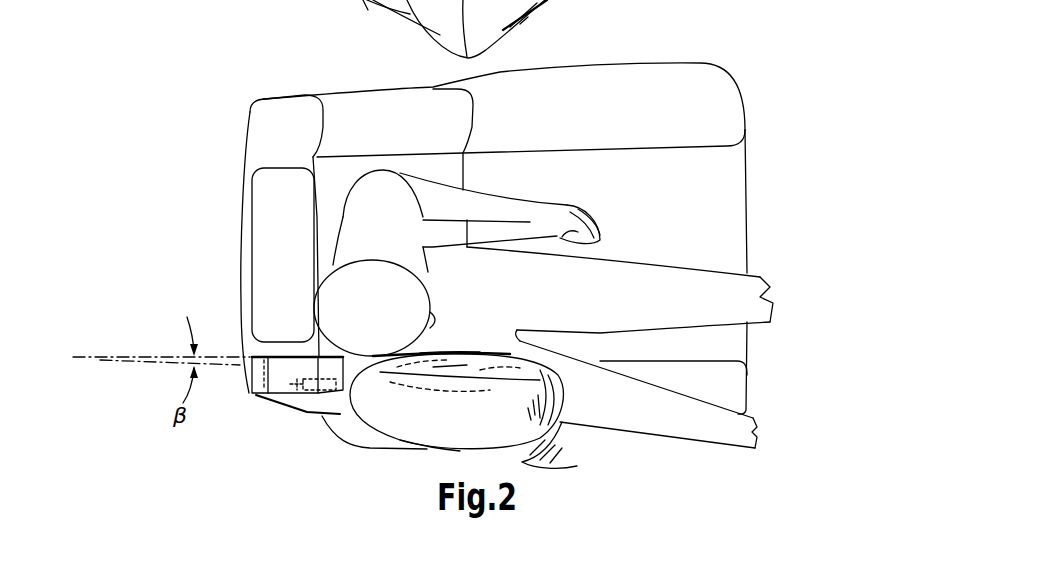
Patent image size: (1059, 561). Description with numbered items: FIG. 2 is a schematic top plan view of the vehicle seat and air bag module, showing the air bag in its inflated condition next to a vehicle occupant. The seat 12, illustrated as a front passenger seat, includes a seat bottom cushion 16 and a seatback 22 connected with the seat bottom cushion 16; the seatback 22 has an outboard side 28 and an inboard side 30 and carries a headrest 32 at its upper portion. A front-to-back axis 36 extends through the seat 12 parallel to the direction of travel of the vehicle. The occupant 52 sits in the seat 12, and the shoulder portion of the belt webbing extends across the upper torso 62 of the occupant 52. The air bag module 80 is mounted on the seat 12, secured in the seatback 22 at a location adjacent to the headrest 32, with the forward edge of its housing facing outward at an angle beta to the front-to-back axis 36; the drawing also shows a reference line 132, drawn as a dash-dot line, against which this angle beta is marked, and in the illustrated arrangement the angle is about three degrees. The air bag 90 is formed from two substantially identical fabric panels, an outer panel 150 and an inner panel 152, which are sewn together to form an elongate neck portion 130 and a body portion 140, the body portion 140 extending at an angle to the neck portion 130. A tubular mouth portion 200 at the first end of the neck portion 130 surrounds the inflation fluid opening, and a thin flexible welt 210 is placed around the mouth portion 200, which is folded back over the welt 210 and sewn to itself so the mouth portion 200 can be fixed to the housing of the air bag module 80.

The seat 12 is at (667, 56).
The seat bottom cushion 16 is at (758, 177).
The seatback 22 is at (252, 118).
The outboard side 28 is at (318, 418).
The inboard side 30 is at (313, 97).
The headrest 32 is at (263, 208).
The front-to-back axis 36 is at (137, 355).
The occupant 52 is at (640, 258).
The upper torso 62 is at (392, 193).
The air bag module 80 is at (248, 408).
The air bag 90 is at (485, 345).
The neck portion 130 is at (298, 375).
The module axis 132 is at (222, 368).
The body portion 140 is at (557, 462).
The outer panel 150 is at (422, 447).
The inner panel 152 is at (457, 353).
The mouth portion 200 is at (300, 412).
The welt 210 is at (568, 400).